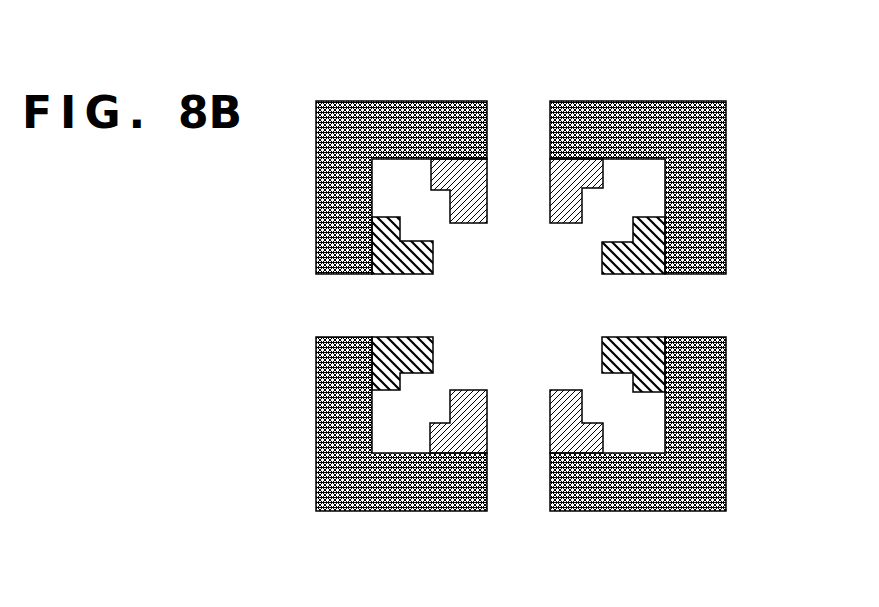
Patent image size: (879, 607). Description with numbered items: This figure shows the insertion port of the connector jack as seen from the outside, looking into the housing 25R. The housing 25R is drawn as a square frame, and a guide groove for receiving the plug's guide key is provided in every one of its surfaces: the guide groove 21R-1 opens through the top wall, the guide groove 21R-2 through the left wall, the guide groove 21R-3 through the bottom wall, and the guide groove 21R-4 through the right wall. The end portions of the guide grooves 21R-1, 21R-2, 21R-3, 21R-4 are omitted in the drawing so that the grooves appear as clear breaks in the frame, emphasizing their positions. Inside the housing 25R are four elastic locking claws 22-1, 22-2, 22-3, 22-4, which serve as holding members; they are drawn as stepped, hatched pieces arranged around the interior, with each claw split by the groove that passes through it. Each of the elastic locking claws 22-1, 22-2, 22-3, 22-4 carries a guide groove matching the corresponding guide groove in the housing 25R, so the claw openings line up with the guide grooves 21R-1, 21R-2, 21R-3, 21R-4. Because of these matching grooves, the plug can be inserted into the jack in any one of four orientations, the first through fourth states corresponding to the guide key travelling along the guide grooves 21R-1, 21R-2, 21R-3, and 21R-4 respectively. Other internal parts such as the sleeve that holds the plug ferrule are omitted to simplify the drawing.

The housing 25R is at (727, 112).
The guide groove 21R-1 is at (568, 41).
The guide groove 21R-2 is at (312, 303).
The guide groove 21R-3 is at (560, 580).
The guide groove 21R-4 is at (821, 259).
The elastic locking claw 22-1 is at (548, 221).
The elastic locking claw 22-2 is at (416, 337).
The elastic locking claw 22-3 is at (550, 391).
The elastic locking claw 22-4 is at (602, 275).